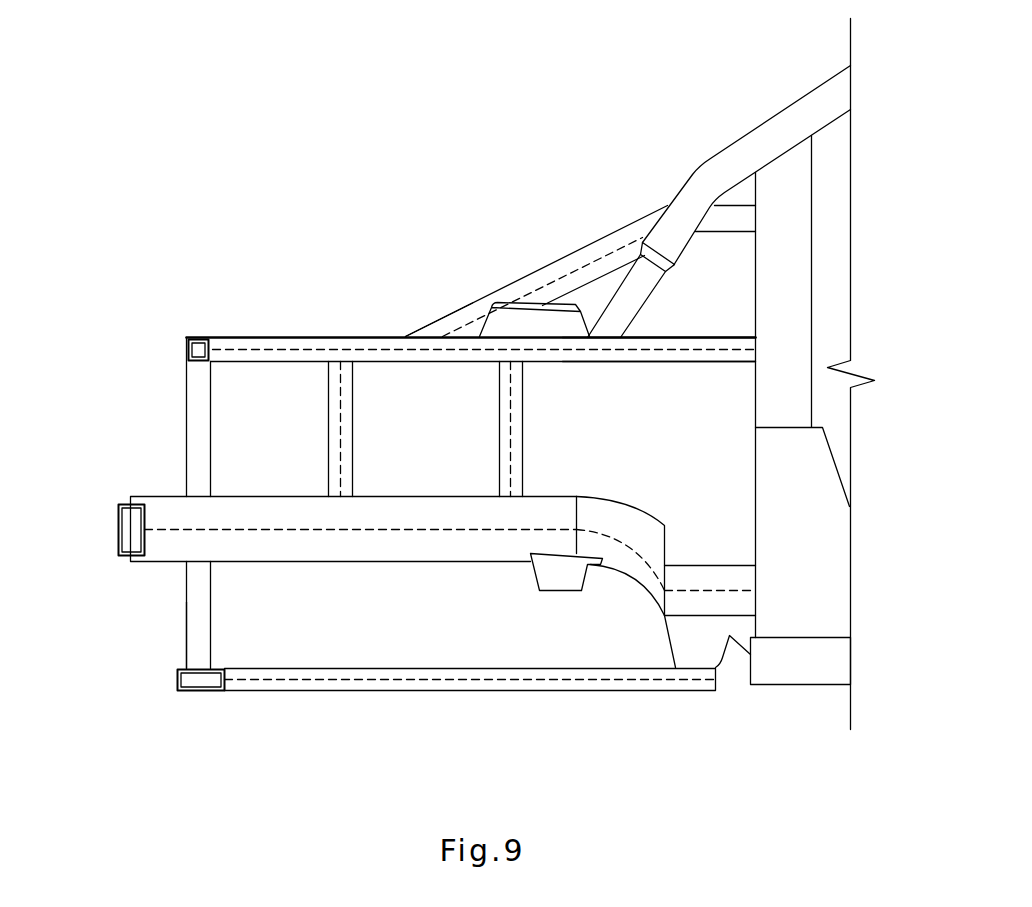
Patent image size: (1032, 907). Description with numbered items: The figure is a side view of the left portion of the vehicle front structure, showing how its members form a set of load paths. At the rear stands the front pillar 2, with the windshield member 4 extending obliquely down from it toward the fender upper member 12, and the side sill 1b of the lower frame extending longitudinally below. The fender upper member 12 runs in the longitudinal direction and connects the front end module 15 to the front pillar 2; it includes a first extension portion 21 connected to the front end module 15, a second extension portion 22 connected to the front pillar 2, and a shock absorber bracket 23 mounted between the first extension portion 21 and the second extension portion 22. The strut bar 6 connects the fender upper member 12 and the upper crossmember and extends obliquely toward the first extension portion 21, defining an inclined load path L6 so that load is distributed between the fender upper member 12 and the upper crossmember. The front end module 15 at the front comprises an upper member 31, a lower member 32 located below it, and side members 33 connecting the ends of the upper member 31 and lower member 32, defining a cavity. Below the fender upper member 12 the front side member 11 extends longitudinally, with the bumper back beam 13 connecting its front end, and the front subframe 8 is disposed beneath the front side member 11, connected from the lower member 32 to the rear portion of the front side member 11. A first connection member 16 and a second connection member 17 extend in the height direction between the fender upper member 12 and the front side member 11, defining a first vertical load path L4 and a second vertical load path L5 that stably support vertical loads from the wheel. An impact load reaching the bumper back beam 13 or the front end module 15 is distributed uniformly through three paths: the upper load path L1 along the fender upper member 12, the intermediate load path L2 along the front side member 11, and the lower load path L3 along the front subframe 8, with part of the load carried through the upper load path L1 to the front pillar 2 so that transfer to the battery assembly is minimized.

The front pillar 2 is at (788, 263).
The windshield member 4 is at (765, 130).
The strut bar 6 is at (572, 262).
The front subframe 8 is at (410, 689).
The front side member 11 is at (428, 544).
The fender upper member 12 is at (479, 326).
The bumper back beam 13 is at (116, 528).
The front end module 15 is at (181, 608).
The first connection member 16 is at (347, 424).
The second connection member 17 is at (518, 424).
The first extension portion 21 is at (279, 345).
The second extension portion 22 is at (664, 356).
The shock absorber bracket 23 is at (522, 300).
The upper member 31 is at (197, 336).
The lower member 32 is at (198, 688).
The side member 33 is at (204, 424).
The side sill 1b is at (713, 578).
The upper load path L1 is at (371, 348).
The intermediate load path L2 is at (303, 530).
The lower load path L3 is at (294, 689).
The first vertical load path L4 is at (337, 380).
The second vertical load path L5 is at (508, 380).
The inclined load path L6 is at (627, 238).